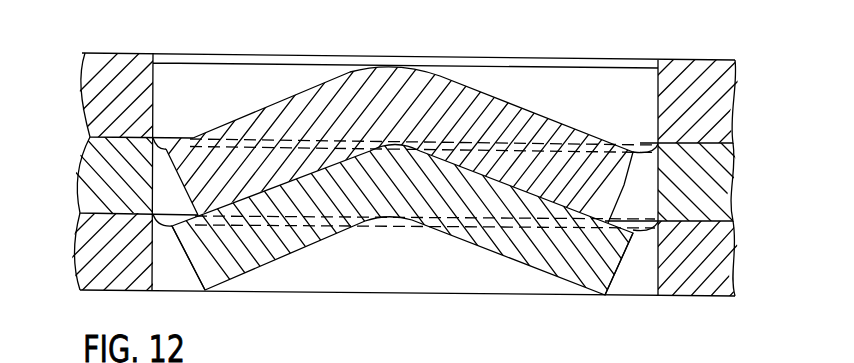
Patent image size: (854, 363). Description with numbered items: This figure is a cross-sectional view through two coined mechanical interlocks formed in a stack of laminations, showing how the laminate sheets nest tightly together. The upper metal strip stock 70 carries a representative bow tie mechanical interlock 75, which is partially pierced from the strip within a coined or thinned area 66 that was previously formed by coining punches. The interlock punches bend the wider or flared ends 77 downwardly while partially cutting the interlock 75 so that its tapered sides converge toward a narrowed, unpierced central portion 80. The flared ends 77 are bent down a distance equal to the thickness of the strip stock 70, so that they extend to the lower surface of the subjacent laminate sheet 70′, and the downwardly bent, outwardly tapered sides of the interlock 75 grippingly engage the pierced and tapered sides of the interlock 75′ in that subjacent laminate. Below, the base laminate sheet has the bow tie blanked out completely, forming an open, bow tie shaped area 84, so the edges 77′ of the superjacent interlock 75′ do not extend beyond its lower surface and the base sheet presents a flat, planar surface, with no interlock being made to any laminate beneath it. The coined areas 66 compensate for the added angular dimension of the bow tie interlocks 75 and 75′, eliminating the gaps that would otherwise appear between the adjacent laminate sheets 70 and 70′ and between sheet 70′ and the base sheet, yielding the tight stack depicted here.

The coined area 66 is at (567, 60).
The metal strip stock 70 is at (722, 100).
The laminate sheet 70′ is at (720, 193).
The mechanical interlock 75 is at (405, 120).
The superjacent interlock 75′ is at (407, 233).
The flared ends 77 is at (177, 178).
The edges of superjacent interlock 77′ is at (182, 258).
The narrowed unpierced central portion 80 is at (400, 65).
The open bow tie shaped area 84 is at (304, 291).